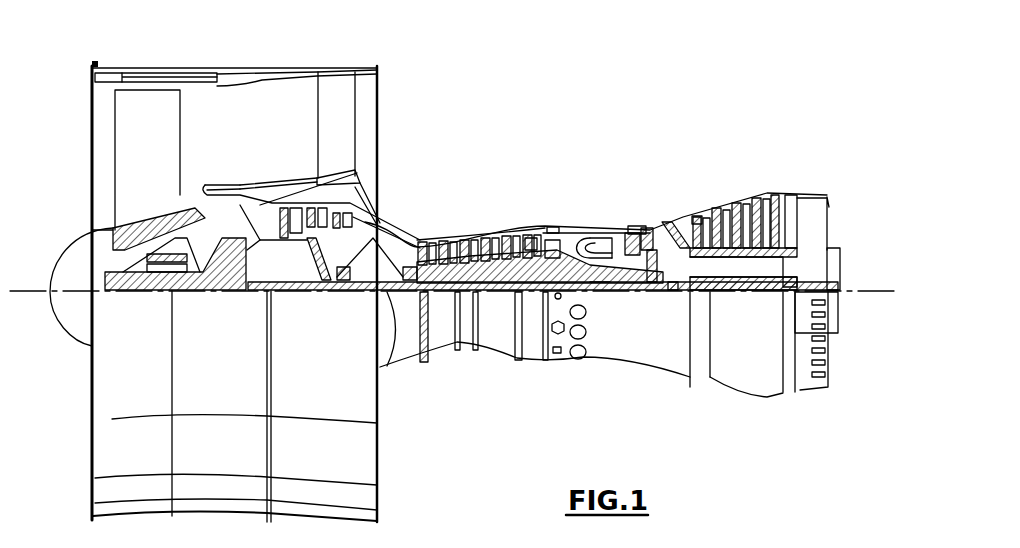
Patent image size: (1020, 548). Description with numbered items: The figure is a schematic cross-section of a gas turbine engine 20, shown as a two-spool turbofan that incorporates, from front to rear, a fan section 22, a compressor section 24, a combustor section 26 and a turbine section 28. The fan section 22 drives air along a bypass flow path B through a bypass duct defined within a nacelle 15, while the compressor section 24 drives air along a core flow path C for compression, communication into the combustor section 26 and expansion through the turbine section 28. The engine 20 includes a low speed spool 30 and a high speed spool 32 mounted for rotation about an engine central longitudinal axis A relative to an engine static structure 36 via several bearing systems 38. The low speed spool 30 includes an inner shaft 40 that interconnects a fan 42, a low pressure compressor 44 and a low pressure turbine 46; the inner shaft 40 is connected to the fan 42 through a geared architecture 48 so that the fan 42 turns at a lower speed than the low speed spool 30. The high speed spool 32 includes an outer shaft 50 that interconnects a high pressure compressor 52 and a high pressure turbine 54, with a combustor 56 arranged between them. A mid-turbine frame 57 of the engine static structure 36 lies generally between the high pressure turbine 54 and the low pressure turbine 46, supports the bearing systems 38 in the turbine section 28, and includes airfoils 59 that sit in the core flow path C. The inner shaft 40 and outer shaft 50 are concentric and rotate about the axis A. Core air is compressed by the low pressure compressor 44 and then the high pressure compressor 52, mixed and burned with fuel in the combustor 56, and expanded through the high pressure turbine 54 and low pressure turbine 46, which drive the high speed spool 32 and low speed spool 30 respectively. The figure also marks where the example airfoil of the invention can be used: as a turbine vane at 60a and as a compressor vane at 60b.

The gas turbine engine 20 is at (597, 104).
The fan section 22 is at (180, 60).
The compressor section 24 is at (413, 210).
The combustor section 26 is at (588, 203).
The turbine section 28 is at (707, 176).
The nacelle 15 is at (233, 70).
The low speed spool 30 is at (498, 303).
The high speed spool 32 is at (540, 245).
The engine static structure 36 is at (532, 362).
The bearing systems 38 is at (343, 290).
The inner shaft 40 is at (397, 358).
The fan 42 is at (164, 170).
The low pressure compressor 44 is at (342, 190).
The low pressure turbine 46 is at (740, 197).
The geared architecture 48 is at (237, 282).
The outer shaft 50 is at (600, 285).
The high pressure compressor 52 is at (476, 262).
The high pressure turbine 54 is at (640, 228).
The combustor 56 is at (592, 242).
The mid-turbine frame 57 is at (679, 205).
The airfoils 59 is at (695, 262).
The turbine vane 60a is at (697, 222).
The compressor vane 60b is at (530, 246).
The engine central longitudinal axis A is at (903, 290).
The bypass flow path B is at (200, 125).
The core flow path C is at (235, 211).